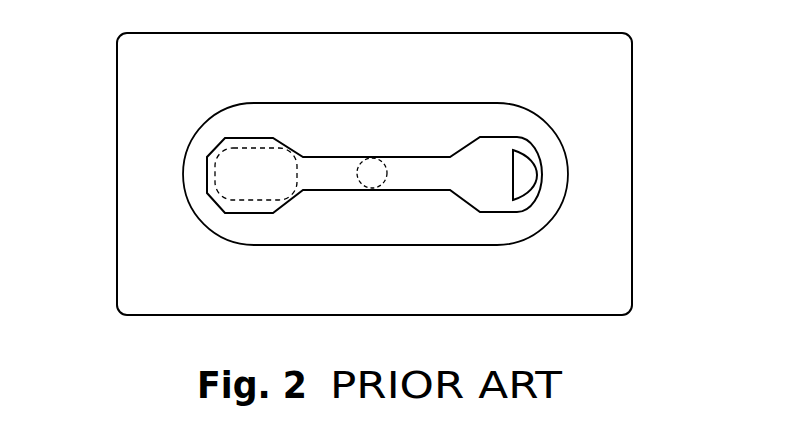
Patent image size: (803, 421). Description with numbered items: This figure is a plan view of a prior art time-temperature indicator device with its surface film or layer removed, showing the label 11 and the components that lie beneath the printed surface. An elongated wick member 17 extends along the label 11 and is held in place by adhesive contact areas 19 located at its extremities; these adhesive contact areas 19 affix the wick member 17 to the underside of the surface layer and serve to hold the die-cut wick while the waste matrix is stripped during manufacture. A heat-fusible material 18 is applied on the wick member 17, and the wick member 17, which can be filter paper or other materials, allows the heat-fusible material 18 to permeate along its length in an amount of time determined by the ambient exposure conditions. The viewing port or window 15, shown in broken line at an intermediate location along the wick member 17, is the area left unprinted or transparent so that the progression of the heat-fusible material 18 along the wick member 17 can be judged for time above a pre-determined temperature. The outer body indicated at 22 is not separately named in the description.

The label 11 is at (91, 87).
The viewing port or window 15 is at (372, 158).
The wick member 17 is at (450, 173).
The heat-fusible material 18 is at (254, 160).
The adhesive contact areas 19 is at (535, 172).
The card body 22 is at (605, 116).